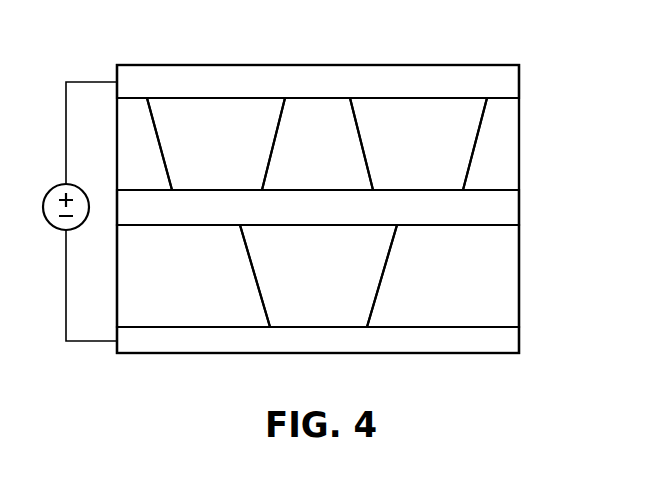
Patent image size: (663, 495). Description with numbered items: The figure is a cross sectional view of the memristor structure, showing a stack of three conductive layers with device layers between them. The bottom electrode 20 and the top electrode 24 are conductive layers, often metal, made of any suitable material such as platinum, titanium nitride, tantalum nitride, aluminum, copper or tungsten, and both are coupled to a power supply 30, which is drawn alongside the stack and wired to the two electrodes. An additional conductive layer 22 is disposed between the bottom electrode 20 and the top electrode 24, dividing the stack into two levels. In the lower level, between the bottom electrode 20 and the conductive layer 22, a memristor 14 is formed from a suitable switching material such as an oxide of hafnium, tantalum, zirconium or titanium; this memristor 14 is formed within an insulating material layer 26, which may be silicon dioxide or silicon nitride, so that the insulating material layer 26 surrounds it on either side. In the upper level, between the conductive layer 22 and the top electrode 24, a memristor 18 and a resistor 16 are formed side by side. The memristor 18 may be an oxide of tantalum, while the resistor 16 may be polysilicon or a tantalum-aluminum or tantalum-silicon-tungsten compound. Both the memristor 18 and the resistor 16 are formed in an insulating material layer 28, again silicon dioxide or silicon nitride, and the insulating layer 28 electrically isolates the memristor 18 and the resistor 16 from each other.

The memristor 14 is at (331, 289).
The resistor 16 is at (430, 155).
The memristor 18 is at (224, 155).
The bottom electrode 20 is at (519, 338).
The additional conductive layer 22 is at (519, 208).
The top electrode 24 is at (519, 84).
The insulating material layer 26 is at (203, 289).
The insulating material layer 28 is at (149, 155).
The power supply 30 is at (54, 187).